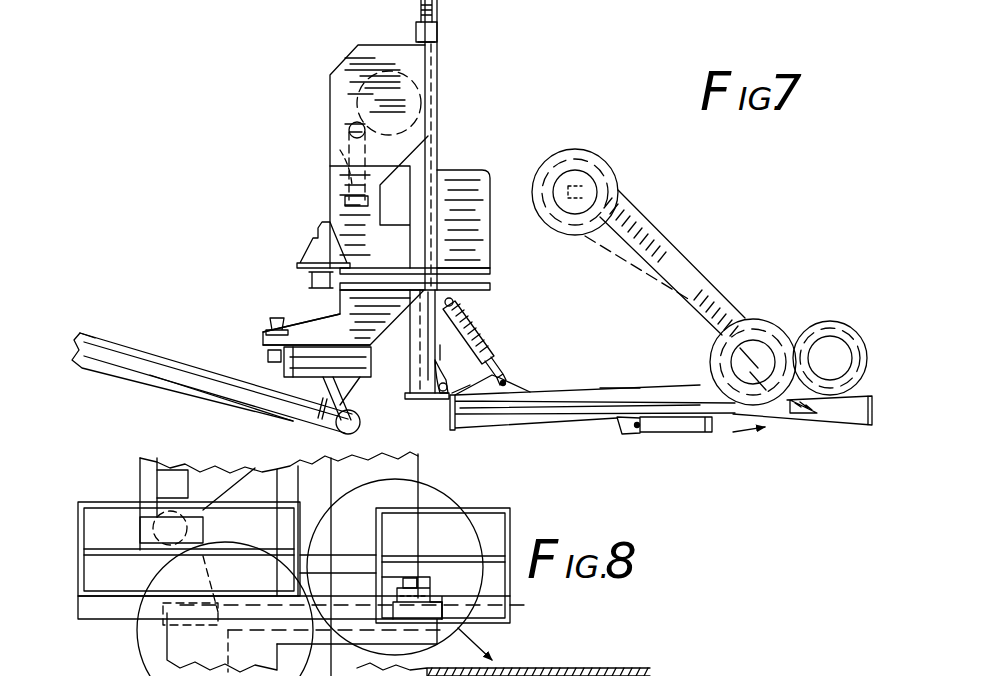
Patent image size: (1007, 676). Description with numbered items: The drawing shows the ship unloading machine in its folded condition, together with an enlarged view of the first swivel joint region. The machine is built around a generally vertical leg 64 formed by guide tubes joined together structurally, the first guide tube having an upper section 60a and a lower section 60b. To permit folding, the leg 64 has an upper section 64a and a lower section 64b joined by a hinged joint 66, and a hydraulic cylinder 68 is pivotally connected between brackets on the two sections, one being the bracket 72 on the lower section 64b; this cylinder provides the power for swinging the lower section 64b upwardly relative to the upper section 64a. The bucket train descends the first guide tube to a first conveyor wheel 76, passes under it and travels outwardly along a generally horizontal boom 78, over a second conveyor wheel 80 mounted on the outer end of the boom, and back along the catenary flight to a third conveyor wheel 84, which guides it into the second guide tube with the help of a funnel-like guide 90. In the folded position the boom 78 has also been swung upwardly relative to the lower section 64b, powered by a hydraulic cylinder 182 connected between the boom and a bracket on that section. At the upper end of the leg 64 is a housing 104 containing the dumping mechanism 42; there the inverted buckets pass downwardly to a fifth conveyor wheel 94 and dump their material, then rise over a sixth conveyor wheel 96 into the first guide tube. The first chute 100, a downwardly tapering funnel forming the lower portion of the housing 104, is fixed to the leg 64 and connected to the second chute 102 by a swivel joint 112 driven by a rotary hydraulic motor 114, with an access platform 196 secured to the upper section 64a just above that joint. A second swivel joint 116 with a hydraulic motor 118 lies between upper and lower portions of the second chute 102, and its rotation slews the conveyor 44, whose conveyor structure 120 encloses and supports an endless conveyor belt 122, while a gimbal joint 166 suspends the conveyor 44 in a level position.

In FIG. 7, the dumping mechanism 42 is at (272, 78).
In FIG. 7, the conveyor 44 is at (143, 340).
In FIG. 7, the upper section of first guide tube 60a is at (440, 428).
In FIG. 7, the lower section of first guide tube 60b is at (560, 428).
In FIG. 7, the leg 64 is at (440, 90).
In FIG. 8, the leg 64 is at (340, 471).
In FIG. 7, the upper section of leg 64a is at (442, 336).
In FIG. 7, the lower section of leg 64b is at (637, 358).
In FIG. 7, the hinged joint 66 is at (457, 372).
In FIG. 7, the hydraulic cylinder 68 is at (470, 330).
In FIG. 7, the bracket 72 is at (508, 368).
In FIG. 7, the first conveyor wheel 76 is at (713, 347).
In FIG. 7, the boom 78 is at (442, 32).
In FIG. 7, the second conveyor wheel 80 is at (595, 152).
In FIG. 7, the third conveyor wheel 84 is at (820, 321).
In FIG. 7, the funnel-like guide 90 is at (872, 428).
In FIG. 7, the fifth conveyor wheel 94 is at (340, 150).
In FIG. 8, the fifth conveyor wheel 94 is at (140, 492).
In FIG. 7, the sixth conveyor wheel 96 is at (398, 71).
In FIG. 7, the first chute 100 is at (330, 180).
In FIG. 8, the first chute 100 is at (150, 565).
In FIG. 7, the second chute 102 is at (335, 318).
In FIG. 8, the second chute 102 is at (167, 645).
In FIG. 7, the housing 104 is at (330, 75).
In FIG. 8, the housing 104 is at (140, 458).
In FIG. 7, the swivel joint 112 is at (494, 280).
In FIG. 8, the swivel joint 112 is at (483, 634).
In FIG. 7, the rotary hydraulic motor 114 is at (302, 230).
In FIG. 8, the rotary hydraulic motor 114 is at (432, 588).
In FIG. 7, the second swivel joint 116 is at (265, 355).
In FIG. 7, the hydraulic motor 118 is at (270, 318).
In FIG. 7, the conveyor structure 120 is at (180, 402).
In FIG. 7, the endless conveyor belt 122 is at (95, 335).
In FIG. 7, the gimbal joint 166 is at (343, 388).
In FIG. 7, the hydraulic cylinder 182 is at (672, 437).
In FIG. 8, the access platform 196 is at (503, 598).